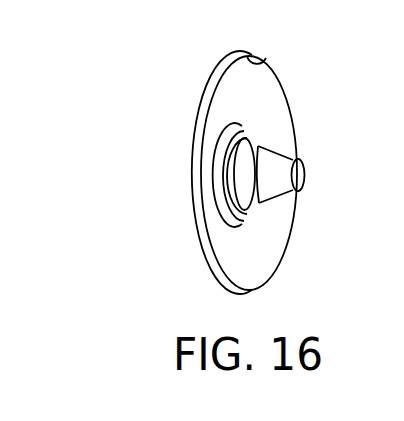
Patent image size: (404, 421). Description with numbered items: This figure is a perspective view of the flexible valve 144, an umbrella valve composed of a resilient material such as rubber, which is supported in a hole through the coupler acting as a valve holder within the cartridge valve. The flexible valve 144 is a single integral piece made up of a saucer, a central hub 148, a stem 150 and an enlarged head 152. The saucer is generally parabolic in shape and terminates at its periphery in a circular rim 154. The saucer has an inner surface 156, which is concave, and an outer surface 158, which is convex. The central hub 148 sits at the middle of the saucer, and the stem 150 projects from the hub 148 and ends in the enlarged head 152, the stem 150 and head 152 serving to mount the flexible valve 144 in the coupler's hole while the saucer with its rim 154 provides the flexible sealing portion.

The flexible valve 144 is at (152, 90).
The central hub 148 is at (248, 159).
The stem 150 is at (258, 152).
The enlarged head 152 is at (300, 175).
The circular rim 154 is at (266, 60).
The inner surface 156 is at (203, 247).
The outer surface 158 is at (263, 260).